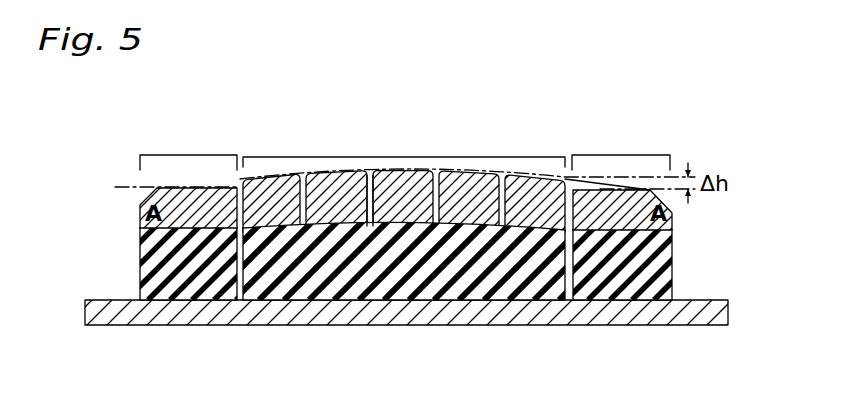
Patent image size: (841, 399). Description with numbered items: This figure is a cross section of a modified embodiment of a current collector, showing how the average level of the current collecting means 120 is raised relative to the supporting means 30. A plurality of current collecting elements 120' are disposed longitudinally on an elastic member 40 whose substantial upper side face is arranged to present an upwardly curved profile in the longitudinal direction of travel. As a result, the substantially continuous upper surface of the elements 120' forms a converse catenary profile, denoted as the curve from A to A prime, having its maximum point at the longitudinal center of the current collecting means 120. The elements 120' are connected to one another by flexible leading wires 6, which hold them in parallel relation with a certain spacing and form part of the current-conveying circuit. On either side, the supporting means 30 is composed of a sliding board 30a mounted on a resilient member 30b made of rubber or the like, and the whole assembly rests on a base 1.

The base substrate 1 is at (258, 312).
The flexible leading wires 6 is at (367, 224).
The supporting means 30 is at (401, 228).
The sliding board 30a is at (145, 224).
The resilient member 30b is at (401, 303).
The elastic member 40 is at (453, 277).
The current collecting means 120 is at (404, 149).
The current collecting elements 120' is at (404, 175).